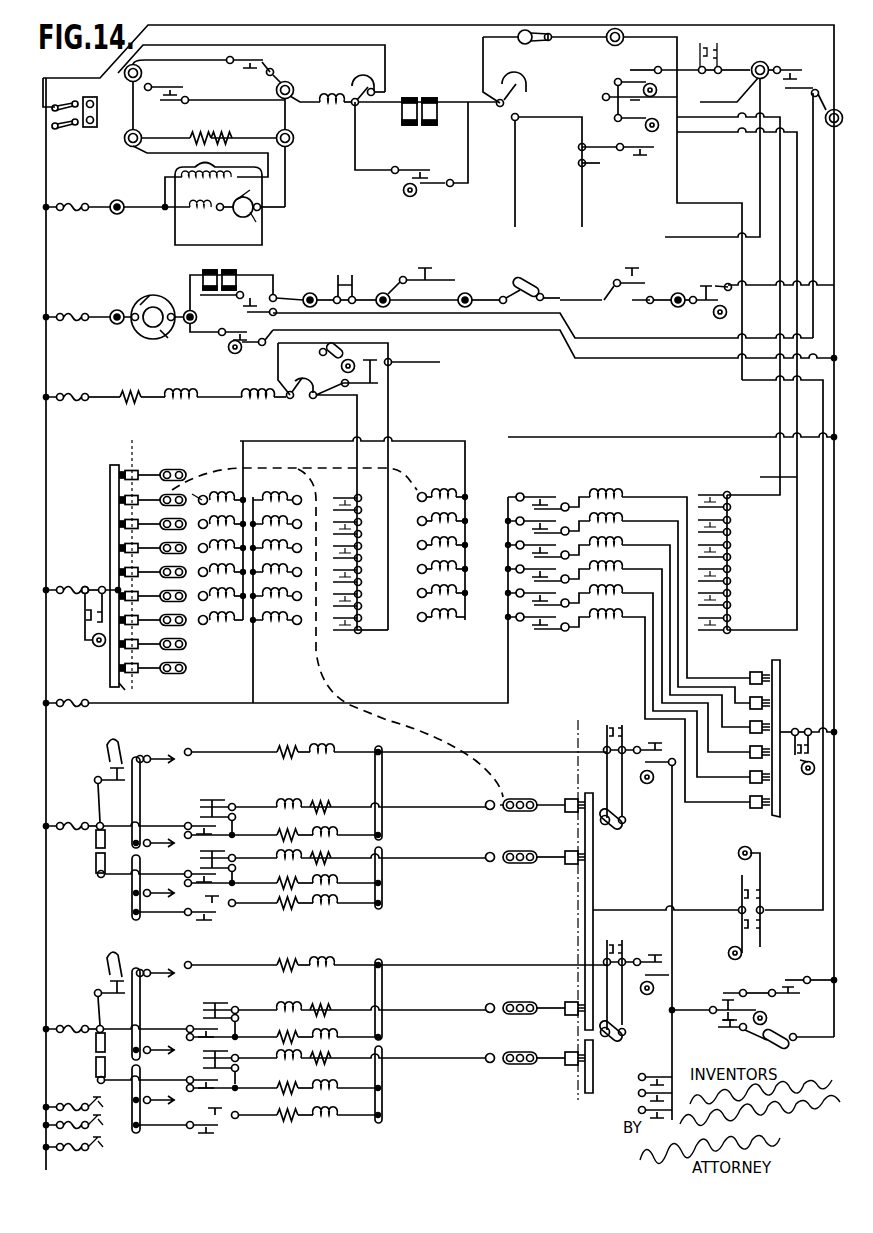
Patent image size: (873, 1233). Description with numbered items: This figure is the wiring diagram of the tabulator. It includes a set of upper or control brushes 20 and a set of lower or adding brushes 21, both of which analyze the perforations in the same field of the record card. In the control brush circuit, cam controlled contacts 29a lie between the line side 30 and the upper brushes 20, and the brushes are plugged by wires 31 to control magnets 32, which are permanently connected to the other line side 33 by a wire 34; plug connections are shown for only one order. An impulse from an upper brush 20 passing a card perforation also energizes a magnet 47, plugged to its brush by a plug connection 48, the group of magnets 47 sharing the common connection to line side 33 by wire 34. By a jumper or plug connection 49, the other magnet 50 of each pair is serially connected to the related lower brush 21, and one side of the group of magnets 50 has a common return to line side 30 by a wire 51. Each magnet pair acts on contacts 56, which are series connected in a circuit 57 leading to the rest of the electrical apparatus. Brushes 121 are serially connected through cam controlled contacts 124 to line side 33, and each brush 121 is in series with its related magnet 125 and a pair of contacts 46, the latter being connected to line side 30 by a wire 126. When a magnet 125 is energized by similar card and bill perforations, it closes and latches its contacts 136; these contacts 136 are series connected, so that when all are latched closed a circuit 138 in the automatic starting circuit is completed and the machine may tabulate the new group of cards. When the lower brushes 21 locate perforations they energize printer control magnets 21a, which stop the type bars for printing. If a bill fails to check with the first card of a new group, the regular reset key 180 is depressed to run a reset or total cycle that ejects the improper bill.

The upper brushes 20 is at (128, 470).
The lower brushes 21 is at (586, 803).
The printer control magnets 21a is at (340, 803).
The cam controlled contacts 29a is at (92, 590).
The line side 30 is at (47, 512).
The wires 31 is at (406, 478).
The control magnets 32 is at (440, 490).
The line side 33 is at (834, 470).
The wire 34 is at (648, 436).
The contacts 46 is at (545, 496).
The magnet 47 is at (216, 488).
The plug connection 48 is at (186, 508).
The jumper or plug connection 49 is at (330, 676).
The magnet 50 is at (278, 494).
The wire 51 is at (255, 690).
The contacts 56 is at (360, 545).
The circuit 57 is at (359, 485).
The brushes 121 is at (760, 725).
The cam controlled contacts 124 is at (805, 725).
The magnet 125 is at (613, 492).
The wire 126 is at (508, 672).
The contacts 136 is at (718, 494).
The circuit 138 is at (766, 477).
The regular reset key 180 is at (643, 298).